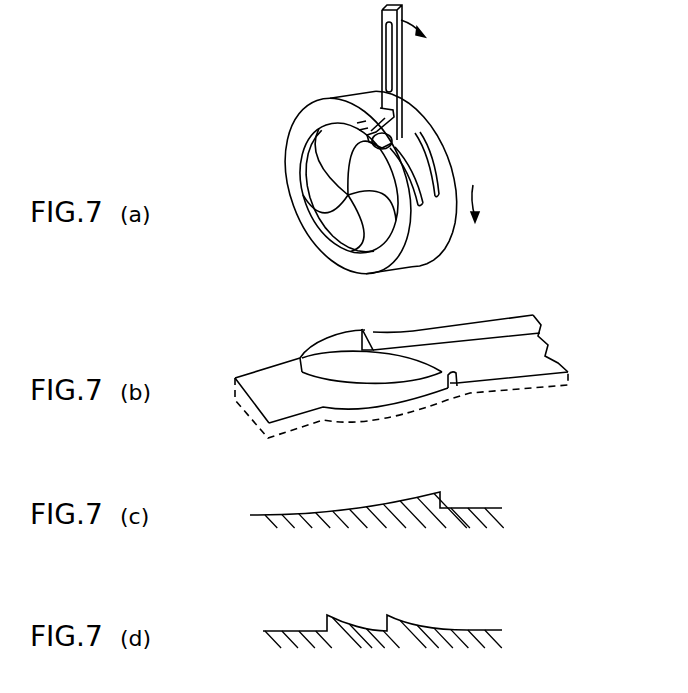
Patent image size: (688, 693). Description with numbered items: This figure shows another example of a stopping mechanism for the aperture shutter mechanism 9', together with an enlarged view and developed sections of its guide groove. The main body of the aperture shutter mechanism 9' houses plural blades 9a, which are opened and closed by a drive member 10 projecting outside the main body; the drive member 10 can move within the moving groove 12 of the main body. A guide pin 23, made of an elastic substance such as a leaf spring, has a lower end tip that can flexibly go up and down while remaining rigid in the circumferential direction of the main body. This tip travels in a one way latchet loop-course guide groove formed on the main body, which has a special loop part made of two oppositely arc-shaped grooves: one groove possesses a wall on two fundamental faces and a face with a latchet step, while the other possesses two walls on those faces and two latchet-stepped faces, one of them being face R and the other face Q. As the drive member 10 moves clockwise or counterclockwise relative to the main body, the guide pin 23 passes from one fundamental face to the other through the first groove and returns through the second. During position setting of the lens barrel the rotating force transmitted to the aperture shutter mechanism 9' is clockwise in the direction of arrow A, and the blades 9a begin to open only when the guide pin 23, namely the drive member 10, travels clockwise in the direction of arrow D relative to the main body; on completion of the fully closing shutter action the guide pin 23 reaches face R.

The aperture shutter mechanism 9' is at (349, 186).
The blades 9a is at (338, 227).
The drive member 10 is at (404, 57).
The moving groove 12 is at (413, 147).
The guide pin 23 is at (378, 113).
The arrow D is at (413, 20).
The arrow A is at (483, 203).
The face R is at (348, 622).
The face Q is at (400, 620).